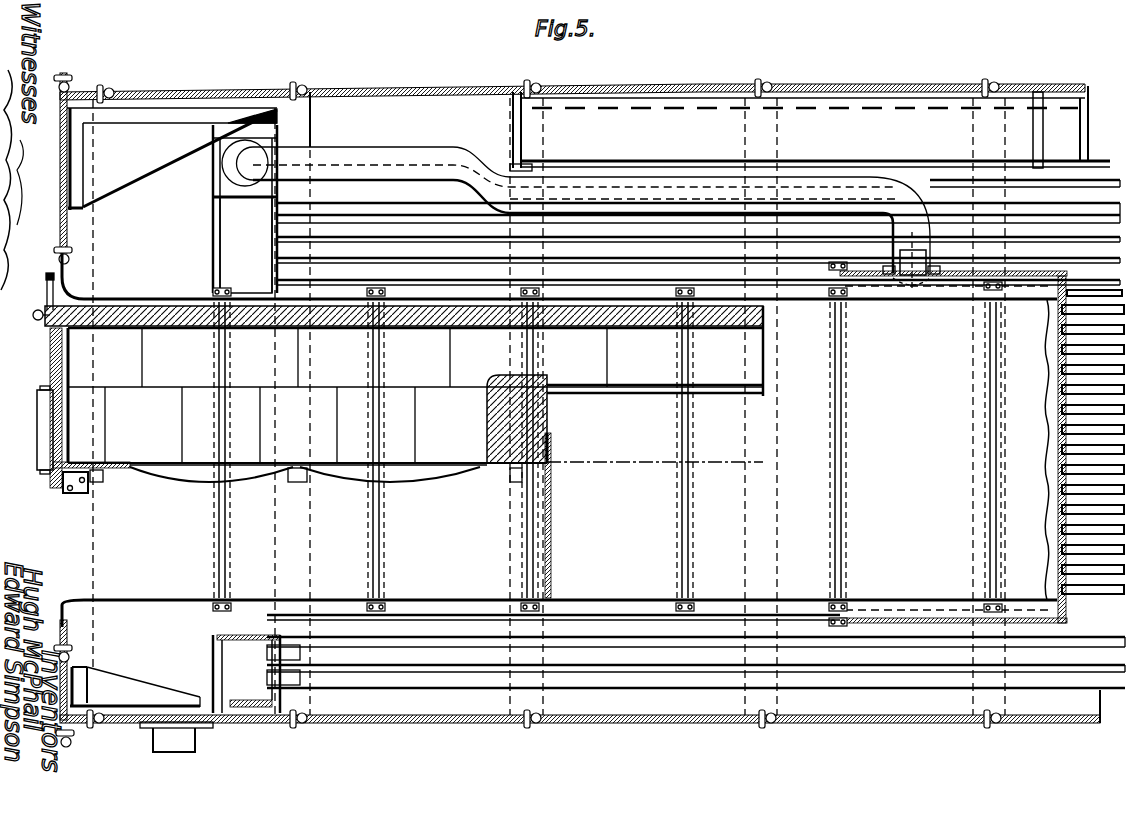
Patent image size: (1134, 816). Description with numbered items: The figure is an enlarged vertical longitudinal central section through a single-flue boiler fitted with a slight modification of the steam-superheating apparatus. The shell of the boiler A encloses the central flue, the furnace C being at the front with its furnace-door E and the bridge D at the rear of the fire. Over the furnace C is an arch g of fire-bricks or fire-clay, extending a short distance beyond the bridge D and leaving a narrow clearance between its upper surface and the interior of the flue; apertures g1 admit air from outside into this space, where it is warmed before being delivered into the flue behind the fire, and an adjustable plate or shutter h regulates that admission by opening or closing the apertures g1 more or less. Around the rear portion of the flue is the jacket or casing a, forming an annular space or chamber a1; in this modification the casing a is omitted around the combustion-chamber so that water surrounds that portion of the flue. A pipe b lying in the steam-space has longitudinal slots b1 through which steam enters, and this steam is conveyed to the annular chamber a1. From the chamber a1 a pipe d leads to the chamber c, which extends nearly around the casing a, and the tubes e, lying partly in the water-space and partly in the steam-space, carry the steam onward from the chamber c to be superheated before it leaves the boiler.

The shell of the boiler A is at (577, 401).
The jacket or casing a is at (946, 272).
The annular space or chamber a1 is at (938, 444).
The pipe b is at (810, 128).
The longitudinal slots or slits b1 is at (594, 108).
The chamber c is at (246, 419).
The pipe d is at (596, 218).
The tubes e is at (696, 436).
The arch g is at (404, 317).
The apertures g1 is at (49, 288).
The adjustable plate or shutter h is at (46, 275).
The furnace C is at (406, 399).
The bridge D is at (519, 486).
The furnace-door E is at (37, 402).